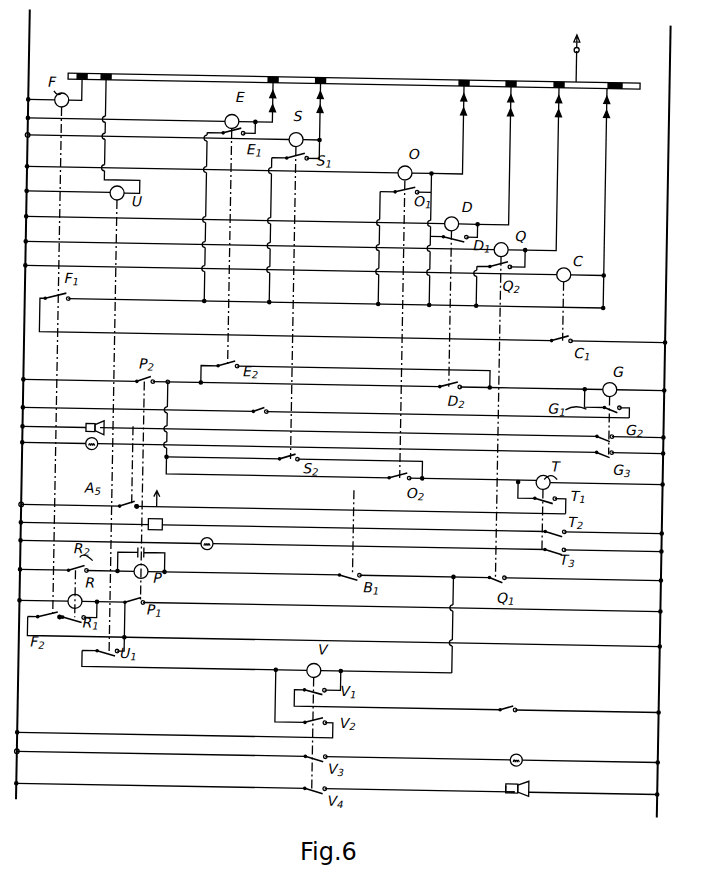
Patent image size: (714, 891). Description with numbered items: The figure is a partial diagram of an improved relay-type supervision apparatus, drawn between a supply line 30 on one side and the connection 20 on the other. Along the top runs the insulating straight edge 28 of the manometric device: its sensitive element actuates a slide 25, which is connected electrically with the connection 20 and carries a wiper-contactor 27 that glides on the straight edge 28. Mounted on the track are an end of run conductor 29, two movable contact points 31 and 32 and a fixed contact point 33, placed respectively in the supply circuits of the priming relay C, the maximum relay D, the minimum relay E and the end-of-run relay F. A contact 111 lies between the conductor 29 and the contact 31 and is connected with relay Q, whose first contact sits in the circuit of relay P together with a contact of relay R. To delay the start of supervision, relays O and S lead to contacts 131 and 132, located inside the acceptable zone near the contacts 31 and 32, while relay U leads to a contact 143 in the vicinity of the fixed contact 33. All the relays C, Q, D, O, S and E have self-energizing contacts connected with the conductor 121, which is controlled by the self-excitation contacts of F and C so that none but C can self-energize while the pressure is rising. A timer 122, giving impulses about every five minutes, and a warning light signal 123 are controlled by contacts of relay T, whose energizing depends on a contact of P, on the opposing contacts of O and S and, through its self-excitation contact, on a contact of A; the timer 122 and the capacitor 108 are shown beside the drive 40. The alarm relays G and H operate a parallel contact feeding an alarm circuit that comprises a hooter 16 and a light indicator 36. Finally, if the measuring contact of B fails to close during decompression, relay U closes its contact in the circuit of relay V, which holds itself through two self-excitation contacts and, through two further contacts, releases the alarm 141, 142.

The negative supply bus line 30 is at (23, 40).
The electrical supply connection 20 is at (663, 40).
The insulating straight edge 28 is at (394, 78).
The fixed contact point 33 is at (76, 78).
The contact 143 is at (102, 78).
The movable contact point 32 is at (269, 78).
The contact 132 is at (316, 78).
The contact 131 is at (459, 78).
The movable contact point 31 is at (507, 78).
The contact 111 is at (556, 86).
The end of run conductor 29 is at (610, 86).
The slide 25 is at (573, 46).
The wiper-contactor 27 is at (572, 68).
The hooter 16 is at (85, 426).
The light indicator 36 is at (88, 446).
The drive shaft 40 is at (165, 497).
The timer 122 is at (164, 522).
The warning light signal 123 is at (215, 544).
The capacitor 108 is at (150, 556).
The conductor 121 is at (318, 310).
The alarm 141 is at (528, 754).
The alarm 142 is at (526, 777).